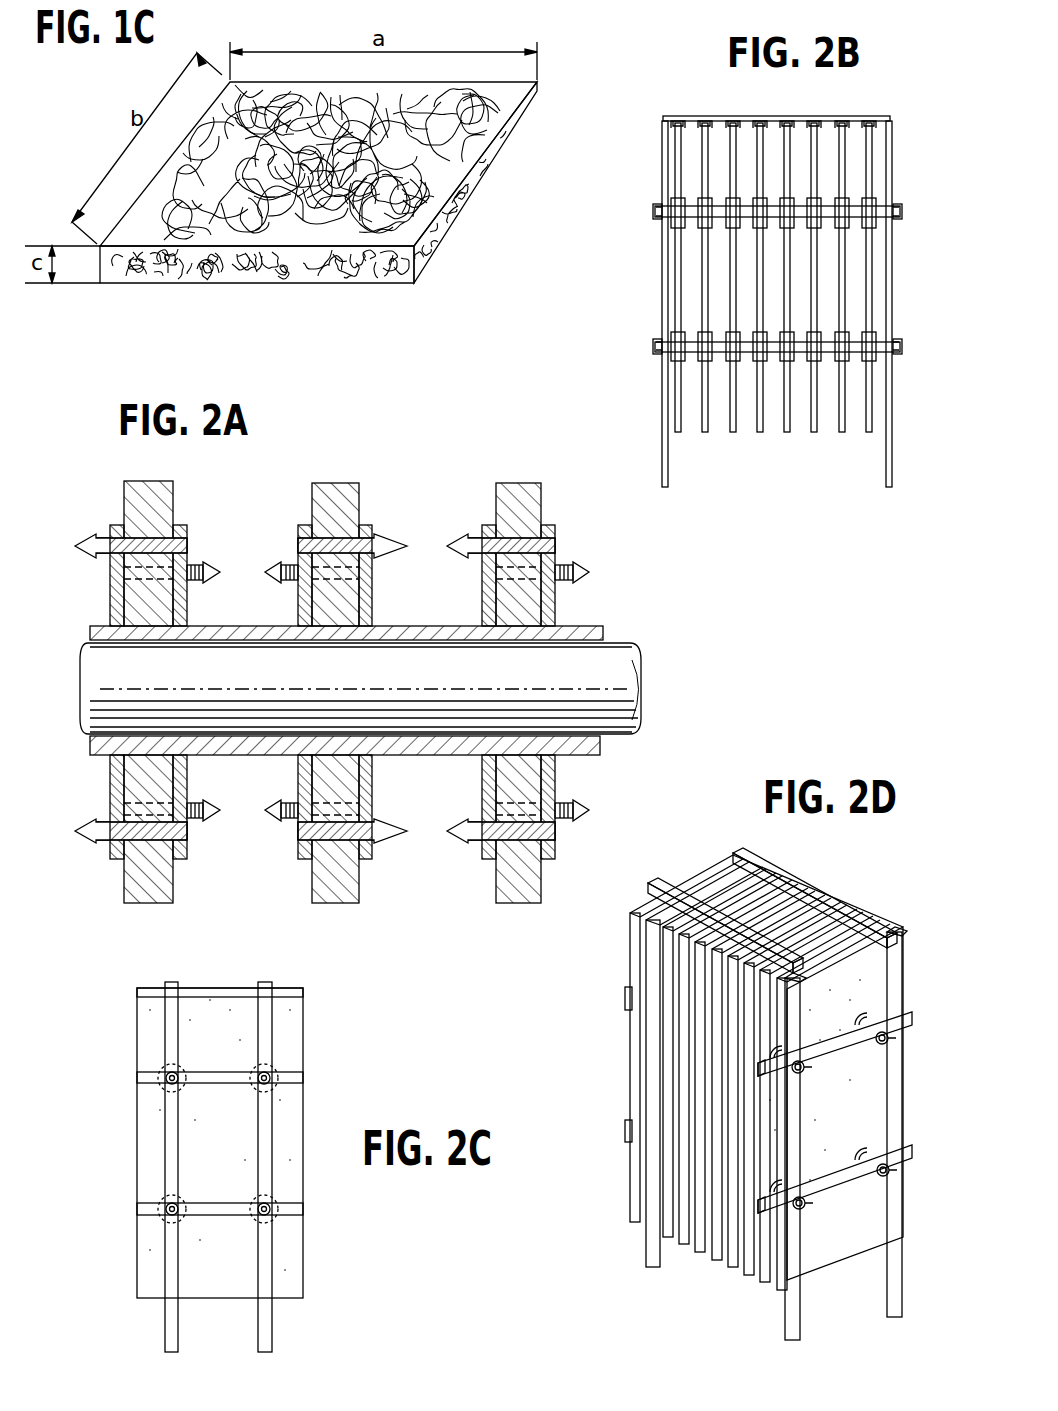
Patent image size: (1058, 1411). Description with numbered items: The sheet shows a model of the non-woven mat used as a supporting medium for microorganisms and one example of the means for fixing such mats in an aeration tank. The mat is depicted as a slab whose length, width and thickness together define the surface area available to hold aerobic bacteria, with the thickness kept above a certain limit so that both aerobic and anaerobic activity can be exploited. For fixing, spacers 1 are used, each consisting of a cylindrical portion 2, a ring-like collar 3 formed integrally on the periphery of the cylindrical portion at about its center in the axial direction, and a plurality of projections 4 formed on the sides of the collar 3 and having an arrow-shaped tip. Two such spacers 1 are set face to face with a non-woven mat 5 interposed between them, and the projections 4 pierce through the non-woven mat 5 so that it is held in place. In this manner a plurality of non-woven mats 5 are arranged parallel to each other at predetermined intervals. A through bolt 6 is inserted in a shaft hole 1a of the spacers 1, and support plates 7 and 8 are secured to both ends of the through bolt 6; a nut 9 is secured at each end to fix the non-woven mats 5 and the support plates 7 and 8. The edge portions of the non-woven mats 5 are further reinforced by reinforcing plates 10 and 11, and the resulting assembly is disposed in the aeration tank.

In FIG. 2A, the spacer 1 is at (291, 757).
In FIG. 2B, the spacer 1 is at (698, 226).
In FIG. 2C, the spacer 1 is at (278, 1070).
In FIG. 2D, the spacer 1 is at (858, 1018).
In FIG. 2A, the shaft hole 1a is at (400, 736).
In FIG. 2A, the cylindrical portion 2 is at (251, 627).
In FIG. 2A, the ring-like collar 3 is at (181, 525).
In FIG. 2A, the projection 4 is at (389, 540).
In FIG. 2A, the non-woven mat 5 is at (154, 881).
In FIG. 2B, the non-woven mat 5 is at (848, 180).
In FIG. 2C, the non-woven mat 5 is at (290, 1128).
In FIG. 2D, the non-woven mat 5 is at (897, 997).
In FIG. 2A, the through bolt 6 is at (399, 663).
In FIG. 2B, the through bolt 6 is at (898, 223).
In FIG. 2C, the through bolt 6 is at (258, 1208).
In FIG. 2D, the through bolt 6 is at (813, 1067).
In FIG. 2B, the support plate 7 is at (890, 297).
In FIG. 2C, the support plate 7 is at (168, 1148).
In FIG. 2D, the support plate 7 is at (883, 1132).
In FIG. 2B, the support plate 8 is at (664, 282).
In FIG. 2B, the nut 9 is at (893, 210).
In FIG. 2C, the nut 9 is at (277, 1210).
In FIG. 2D, the nut 9 is at (870, 1047).
In FIG. 2B, the reinforcing plate 10 is at (827, 126).
In FIG. 2C, the reinforcing plate 10 is at (297, 993).
In FIG. 2D, the reinforcing plate 10 is at (853, 903).
In FIG. 2B, the reinforcing plate 11 is at (759, 117).
In FIG. 2C, the reinforcing plate 11 is at (268, 982).
In FIG. 2D, the reinforcing plate 11 is at (807, 893).